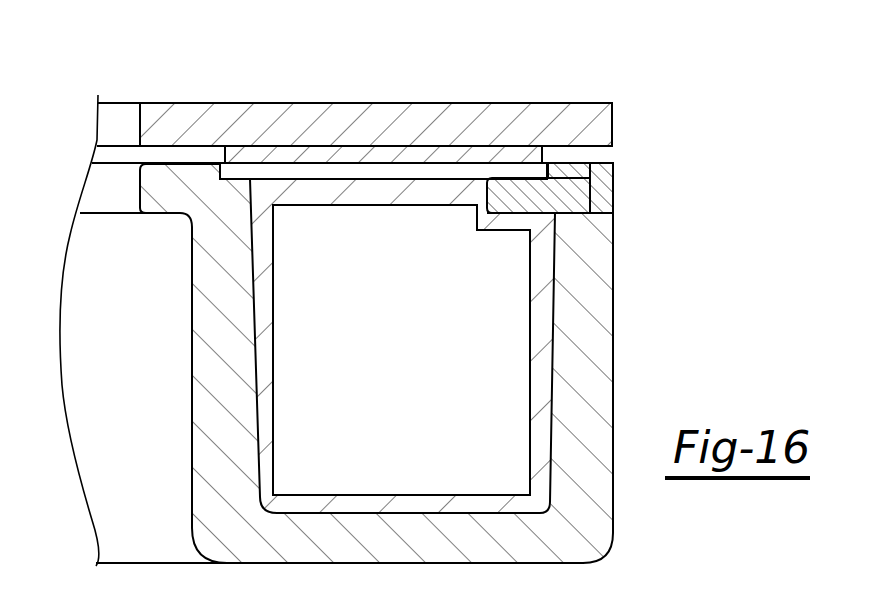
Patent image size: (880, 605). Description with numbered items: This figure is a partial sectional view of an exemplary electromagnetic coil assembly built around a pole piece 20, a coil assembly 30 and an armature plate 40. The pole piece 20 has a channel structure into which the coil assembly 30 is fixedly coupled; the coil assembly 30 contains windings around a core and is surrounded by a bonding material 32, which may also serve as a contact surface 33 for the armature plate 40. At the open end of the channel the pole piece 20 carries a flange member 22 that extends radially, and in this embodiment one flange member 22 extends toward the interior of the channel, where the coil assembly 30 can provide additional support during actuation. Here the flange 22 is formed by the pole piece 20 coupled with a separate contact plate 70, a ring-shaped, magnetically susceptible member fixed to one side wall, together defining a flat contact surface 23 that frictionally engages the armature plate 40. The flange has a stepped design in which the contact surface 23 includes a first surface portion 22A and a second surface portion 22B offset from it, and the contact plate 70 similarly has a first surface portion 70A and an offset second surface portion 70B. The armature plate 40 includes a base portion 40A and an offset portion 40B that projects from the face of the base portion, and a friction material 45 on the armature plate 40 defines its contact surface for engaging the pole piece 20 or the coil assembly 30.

The pole piece 20 is at (550, 528).
The flange member 22 is at (150, 190).
The first surface portion 22A is at (172, 163).
The second surface portion 22B is at (235, 180).
The contact surface 23 is at (243, 169).
The coil assembly 30 is at (420, 369).
The bonding material 32 is at (543, 315).
The contact surface 33 is at (384, 166).
The armature plate 40 is at (585, 112).
The base portion 40A is at (160, 103).
The offset portion 40B is at (540, 152).
The friction material 45 is at (468, 152).
The contact plate 70 is at (578, 182).
The first surface portion 70A is at (572, 213).
The second surface portion 70B is at (565, 166).